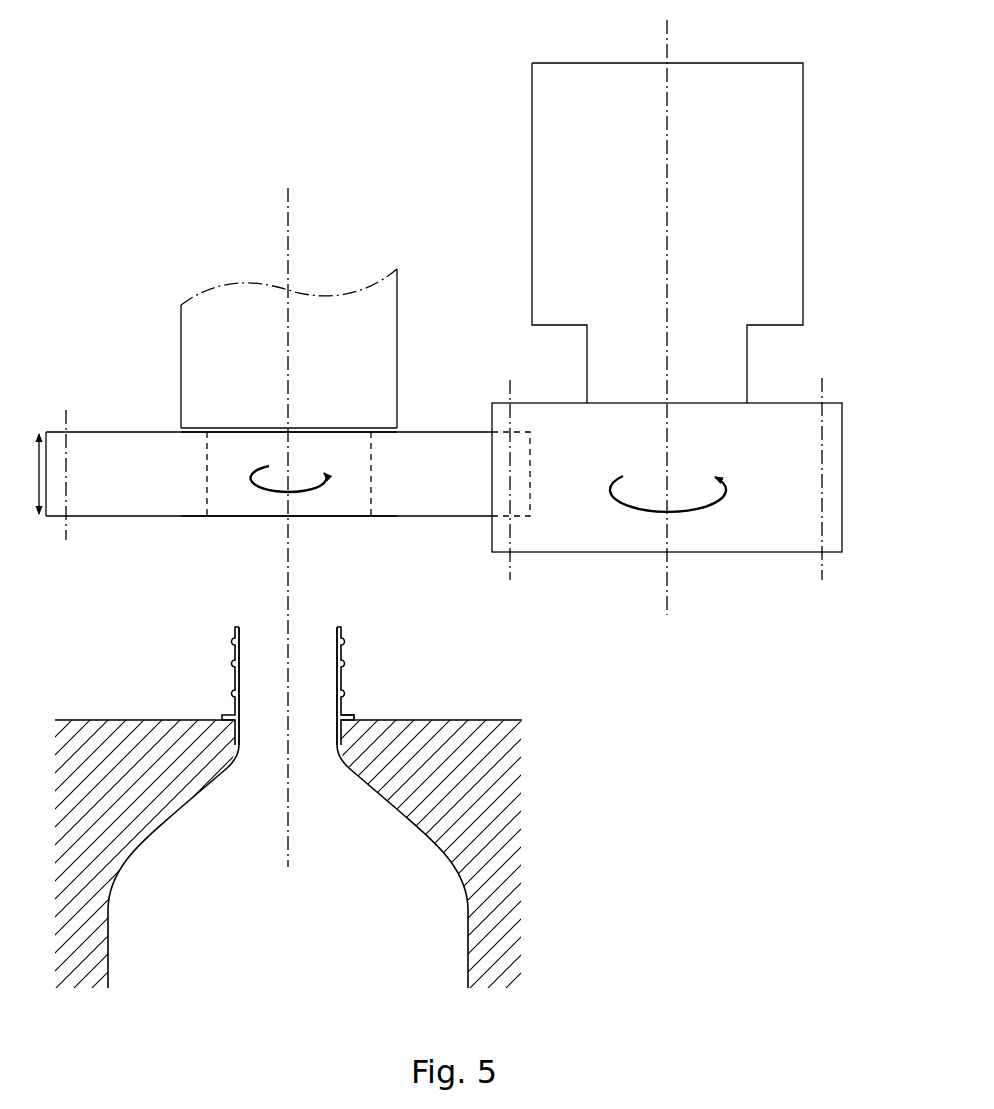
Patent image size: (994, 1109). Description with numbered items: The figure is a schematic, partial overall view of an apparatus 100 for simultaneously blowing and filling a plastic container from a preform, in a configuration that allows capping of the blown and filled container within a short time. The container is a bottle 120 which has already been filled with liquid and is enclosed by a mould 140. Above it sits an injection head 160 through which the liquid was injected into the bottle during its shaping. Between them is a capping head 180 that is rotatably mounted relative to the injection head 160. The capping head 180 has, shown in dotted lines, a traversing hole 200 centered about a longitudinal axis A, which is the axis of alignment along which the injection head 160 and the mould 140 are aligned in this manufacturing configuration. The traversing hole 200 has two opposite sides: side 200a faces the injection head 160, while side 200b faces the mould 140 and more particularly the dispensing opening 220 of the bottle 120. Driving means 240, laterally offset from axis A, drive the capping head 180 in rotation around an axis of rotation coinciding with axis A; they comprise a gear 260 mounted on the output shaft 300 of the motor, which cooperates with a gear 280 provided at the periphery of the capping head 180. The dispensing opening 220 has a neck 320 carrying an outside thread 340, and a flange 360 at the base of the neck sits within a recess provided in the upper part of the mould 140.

The apparatus 100 is at (131, 79).
The bottle 120 is at (307, 921).
The mould 140 is at (512, 808).
The injection head 160 is at (407, 276).
The capping head 180 is at (175, 524).
The traversing hole 200 is at (372, 518).
The side of traversing hole 200a is at (337, 430).
The opposite side of traversing hole 200b is at (350, 518).
The dispensing opening 220 is at (323, 625).
The driving means 240 is at (769, 63).
The gear 260 is at (719, 577).
The gear 280 is at (514, 518).
The output shaft 300 is at (668, 450).
The neck 320 is at (358, 667).
The outside thread 340 is at (230, 662).
The flange 360 is at (348, 716).
The longitudinal axis A is at (290, 203).